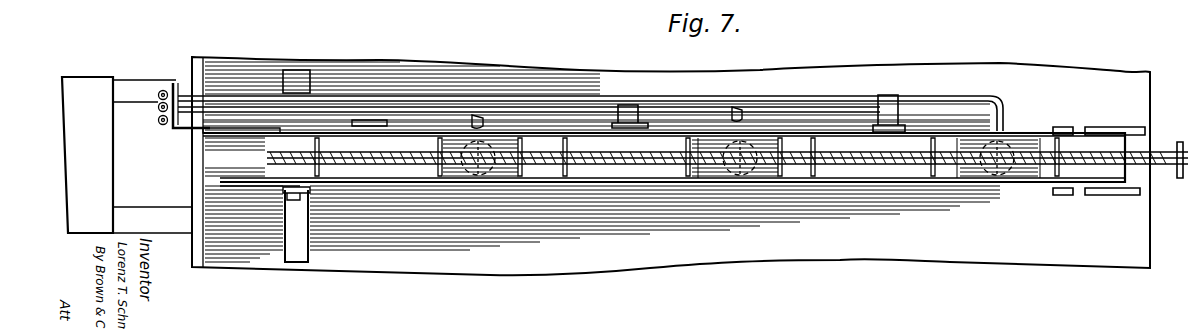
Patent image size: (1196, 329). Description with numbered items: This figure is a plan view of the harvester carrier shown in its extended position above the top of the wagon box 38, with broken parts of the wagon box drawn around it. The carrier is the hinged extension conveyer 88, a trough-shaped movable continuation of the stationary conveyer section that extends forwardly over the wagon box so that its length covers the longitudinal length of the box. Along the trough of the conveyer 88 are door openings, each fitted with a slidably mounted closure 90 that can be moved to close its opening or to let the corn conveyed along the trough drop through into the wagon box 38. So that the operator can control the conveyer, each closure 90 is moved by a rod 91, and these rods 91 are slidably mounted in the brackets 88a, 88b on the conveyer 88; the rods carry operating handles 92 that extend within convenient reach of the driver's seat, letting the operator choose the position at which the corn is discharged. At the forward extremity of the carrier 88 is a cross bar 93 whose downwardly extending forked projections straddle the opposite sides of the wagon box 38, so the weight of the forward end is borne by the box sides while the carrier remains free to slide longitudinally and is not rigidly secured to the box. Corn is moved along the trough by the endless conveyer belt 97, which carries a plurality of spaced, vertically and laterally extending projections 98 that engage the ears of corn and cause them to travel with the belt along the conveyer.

The wagon box 38 is at (1073, 258).
The extension conveyer 88 is at (808, 180).
The bracket 88a is at (173, 82).
The bracket 88b is at (891, 60).
The closure 90 is at (488, 178).
The rod 91 is at (407, 120).
The operating handle 92 is at (158, 105).
The cross bar 93 is at (291, 78).
The endless conveyer belt 97 is at (387, 164).
The projection 98 is at (318, 168).